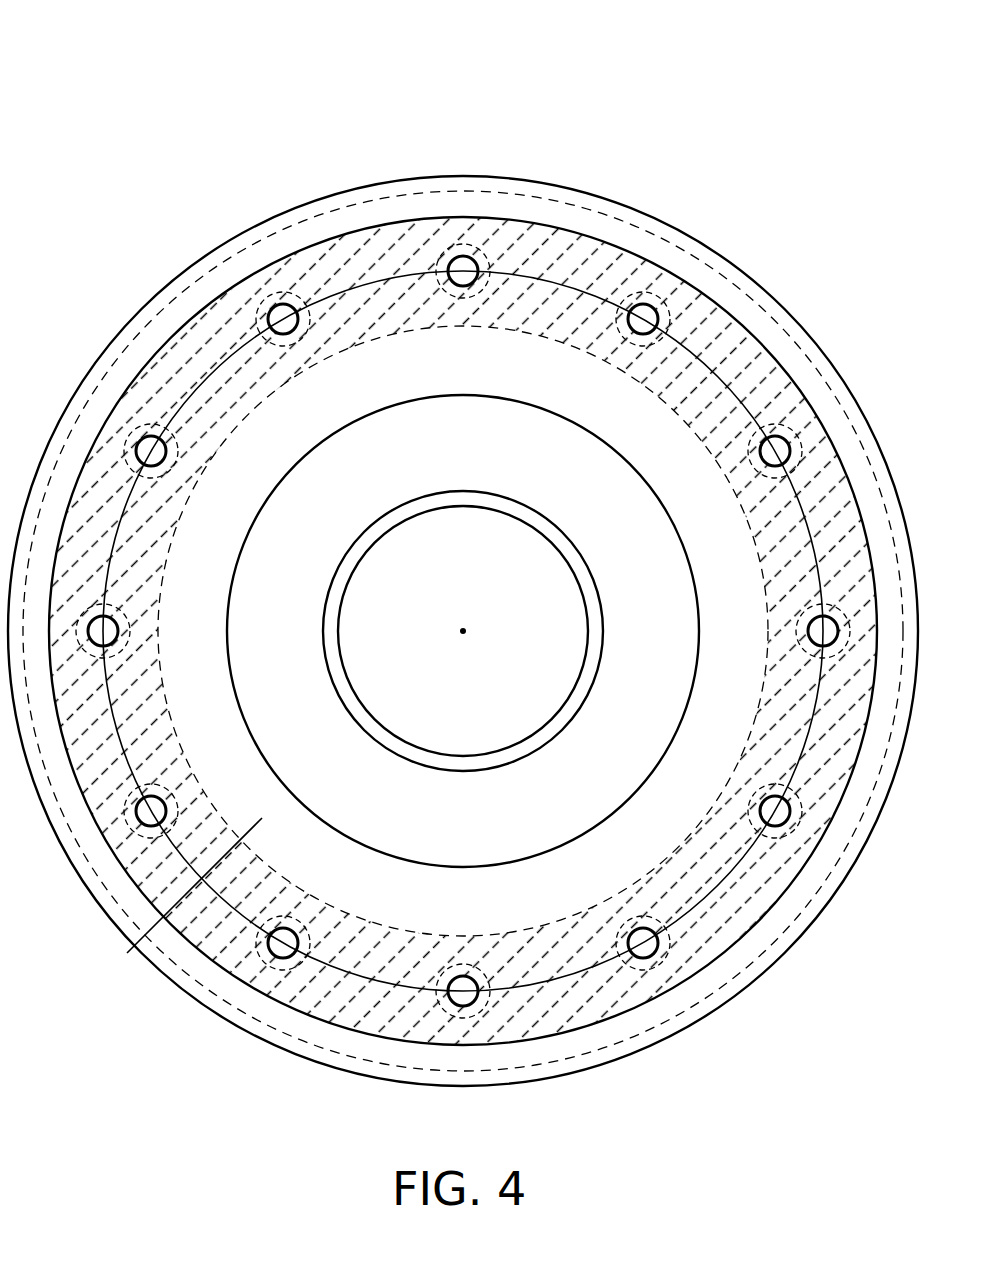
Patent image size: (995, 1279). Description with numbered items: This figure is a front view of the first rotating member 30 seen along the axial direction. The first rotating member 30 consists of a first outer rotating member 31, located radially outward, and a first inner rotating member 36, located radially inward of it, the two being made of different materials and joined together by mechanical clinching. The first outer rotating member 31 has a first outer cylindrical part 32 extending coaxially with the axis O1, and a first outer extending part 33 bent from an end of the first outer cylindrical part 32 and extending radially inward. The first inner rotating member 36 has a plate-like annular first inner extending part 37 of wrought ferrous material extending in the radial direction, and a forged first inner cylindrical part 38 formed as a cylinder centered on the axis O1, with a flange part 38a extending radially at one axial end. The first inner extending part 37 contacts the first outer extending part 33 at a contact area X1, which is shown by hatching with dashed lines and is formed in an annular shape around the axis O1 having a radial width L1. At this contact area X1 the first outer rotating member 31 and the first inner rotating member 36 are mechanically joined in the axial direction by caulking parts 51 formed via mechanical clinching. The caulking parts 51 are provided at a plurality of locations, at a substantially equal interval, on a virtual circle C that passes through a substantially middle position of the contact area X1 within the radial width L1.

The first rotating member 30 is at (533, 153).
The first outer rotating member 31 is at (463, 603).
The first outer cylindrical part 32 is at (217, 247).
The first outer extending part 33 is at (184, 310).
The first inner rotating member 36 is at (463, 590).
The first inner extending part 37 is at (657, 262).
The first inner cylindrical part 38 is at (633, 467).
The flange part 38a is at (351, 511).
The caulking part 51 is at (437, 265).
The virtual circle C is at (560, 283).
The axis O1 is at (465, 630).
The width of contact area L1 is at (243, 837).
The contact area X1 is at (820, 340).